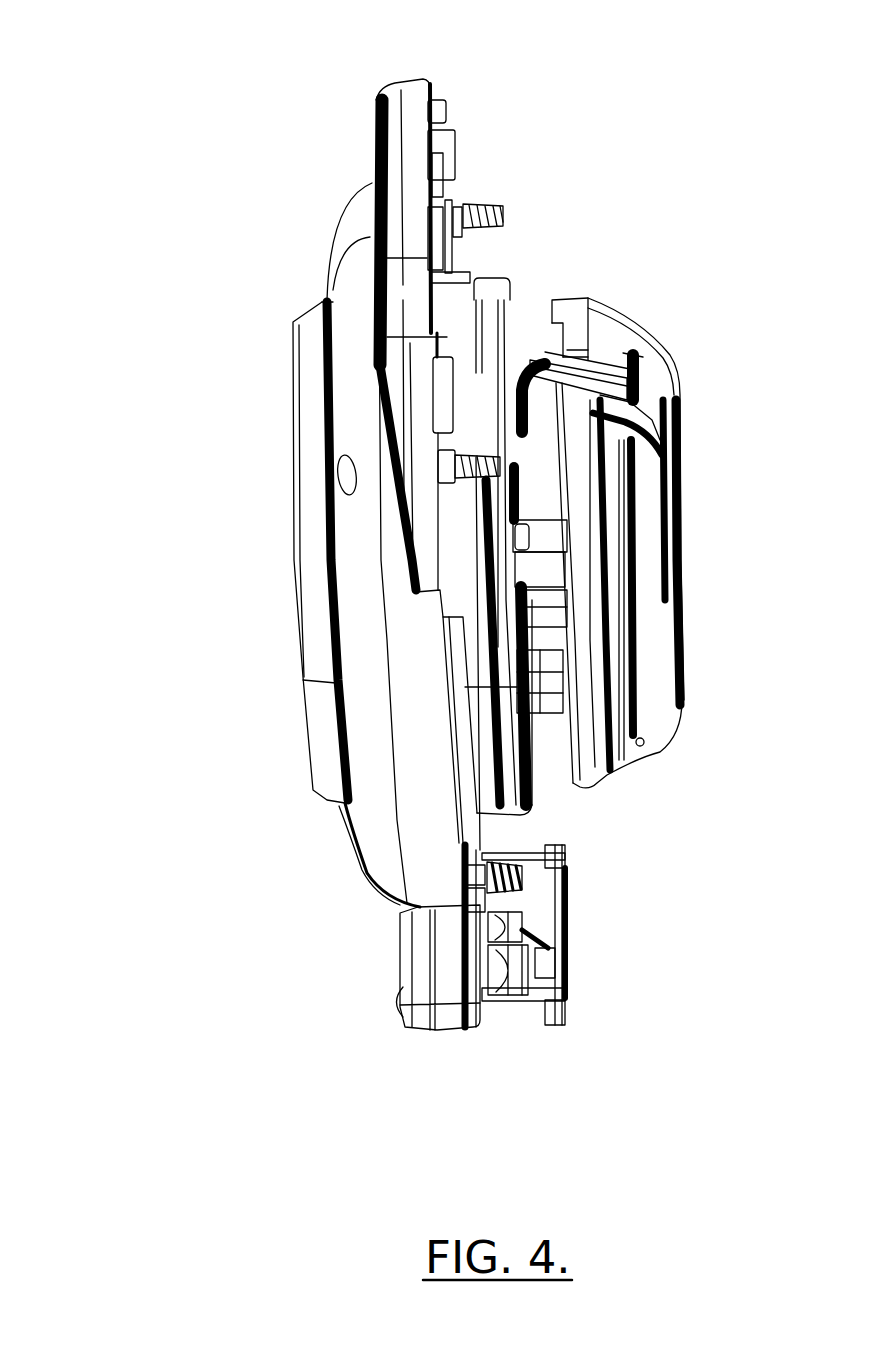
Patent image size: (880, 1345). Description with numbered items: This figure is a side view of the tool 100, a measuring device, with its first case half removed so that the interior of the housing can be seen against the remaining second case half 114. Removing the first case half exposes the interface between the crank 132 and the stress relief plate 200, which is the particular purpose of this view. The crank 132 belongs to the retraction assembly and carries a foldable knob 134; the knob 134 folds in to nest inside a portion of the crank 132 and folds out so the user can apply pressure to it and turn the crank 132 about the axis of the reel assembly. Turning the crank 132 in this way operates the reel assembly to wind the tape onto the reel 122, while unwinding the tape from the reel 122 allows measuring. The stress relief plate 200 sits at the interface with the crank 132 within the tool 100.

The tool 100 is at (207, 79).
The second case half 114 is at (395, 150).
The reel 122 is at (478, 266).
The foldable knob 134 is at (634, 381).
The crank 132 is at (600, 740).
The stress relief plate 200 is at (520, 757).